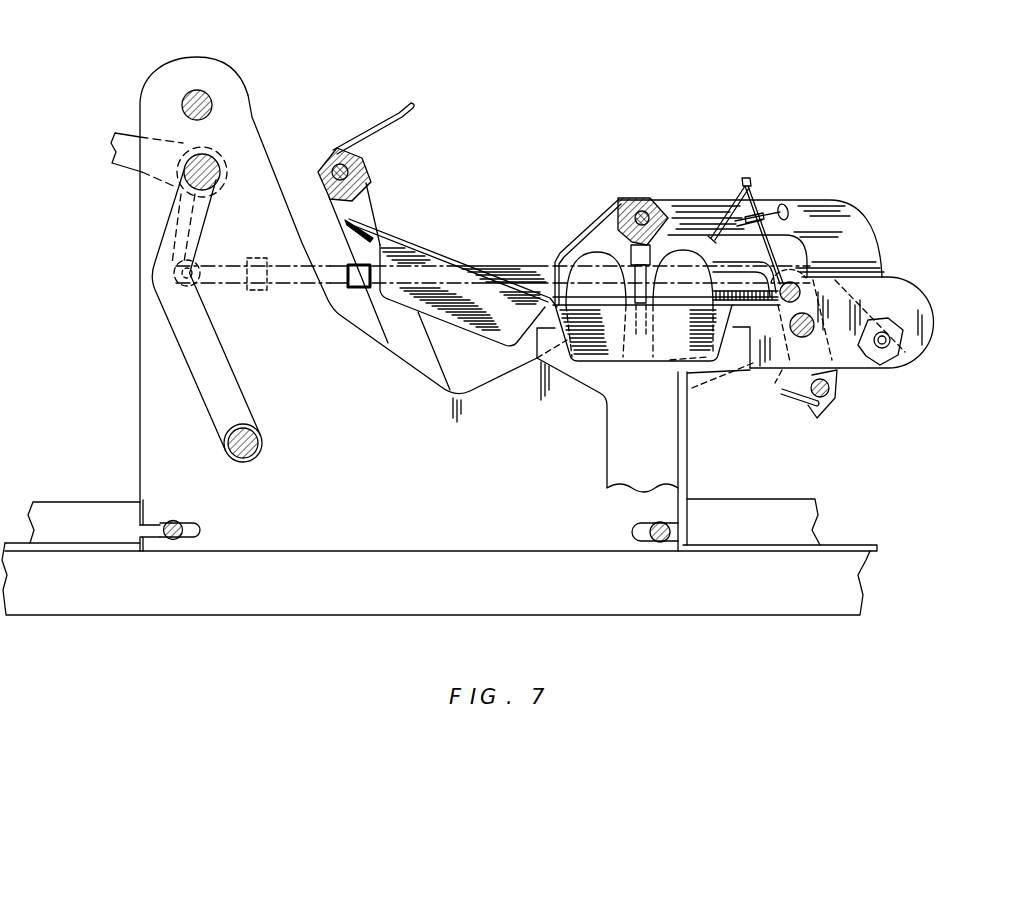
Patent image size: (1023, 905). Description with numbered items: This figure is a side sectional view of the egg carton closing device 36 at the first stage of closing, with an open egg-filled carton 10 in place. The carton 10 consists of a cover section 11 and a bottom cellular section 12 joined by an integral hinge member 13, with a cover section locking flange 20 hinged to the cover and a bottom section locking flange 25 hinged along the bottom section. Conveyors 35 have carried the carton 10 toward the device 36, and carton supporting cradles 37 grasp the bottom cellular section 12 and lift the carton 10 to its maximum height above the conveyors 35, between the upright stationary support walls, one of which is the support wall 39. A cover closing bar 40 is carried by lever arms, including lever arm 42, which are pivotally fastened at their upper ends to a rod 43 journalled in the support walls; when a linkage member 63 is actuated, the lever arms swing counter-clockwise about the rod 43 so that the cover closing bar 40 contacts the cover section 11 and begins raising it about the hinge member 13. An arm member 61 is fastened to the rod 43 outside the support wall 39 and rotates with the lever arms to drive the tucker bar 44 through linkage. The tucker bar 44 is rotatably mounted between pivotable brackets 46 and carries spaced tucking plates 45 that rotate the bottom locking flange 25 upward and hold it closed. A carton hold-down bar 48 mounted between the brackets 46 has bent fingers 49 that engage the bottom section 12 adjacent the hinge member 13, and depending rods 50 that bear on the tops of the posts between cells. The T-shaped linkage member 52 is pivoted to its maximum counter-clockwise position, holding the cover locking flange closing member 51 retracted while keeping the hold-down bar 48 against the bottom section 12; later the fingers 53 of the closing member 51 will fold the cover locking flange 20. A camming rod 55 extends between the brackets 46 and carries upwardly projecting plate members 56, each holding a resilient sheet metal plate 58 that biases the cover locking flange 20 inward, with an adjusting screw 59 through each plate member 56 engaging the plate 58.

The carton 10 is at (500, 251).
The cover section 11 is at (474, 314).
The bottom cellular section 12 is at (642, 338).
The hinge member 13 is at (553, 300).
The cover section locking flange 20 is at (358, 239).
The bottom section locking flange 25 is at (762, 362).
The conveyors 35 is at (835, 547).
The carton closing device 36 is at (137, 291).
The carton supporting cradles 37 is at (651, 450).
The support wall 39 is at (689, 462).
The cover closing bar 40 is at (259, 434).
The lever arm 42 is at (204, 397).
The rod 43 is at (219, 158).
The tucker bar 44 is at (836, 398).
The tucking plates 45 is at (793, 400).
The pivotable brackets 46 is at (900, 337).
The carton hold-down bar 48 is at (654, 201).
The bent fingers 49 is at (611, 203).
The depending rods 50 is at (628, 273).
The cover locking flange closing member 51 is at (364, 165).
The linkage member 52 is at (381, 208).
The fingers 53 is at (363, 130).
The rod 55 is at (800, 287).
The plate members 56 is at (754, 203).
The resilient sheet metal plate 58 is at (721, 207).
The adjusting screw 59 is at (790, 208).
The arm member 61 is at (165, 236).
The linkage member 63 is at (803, 253).